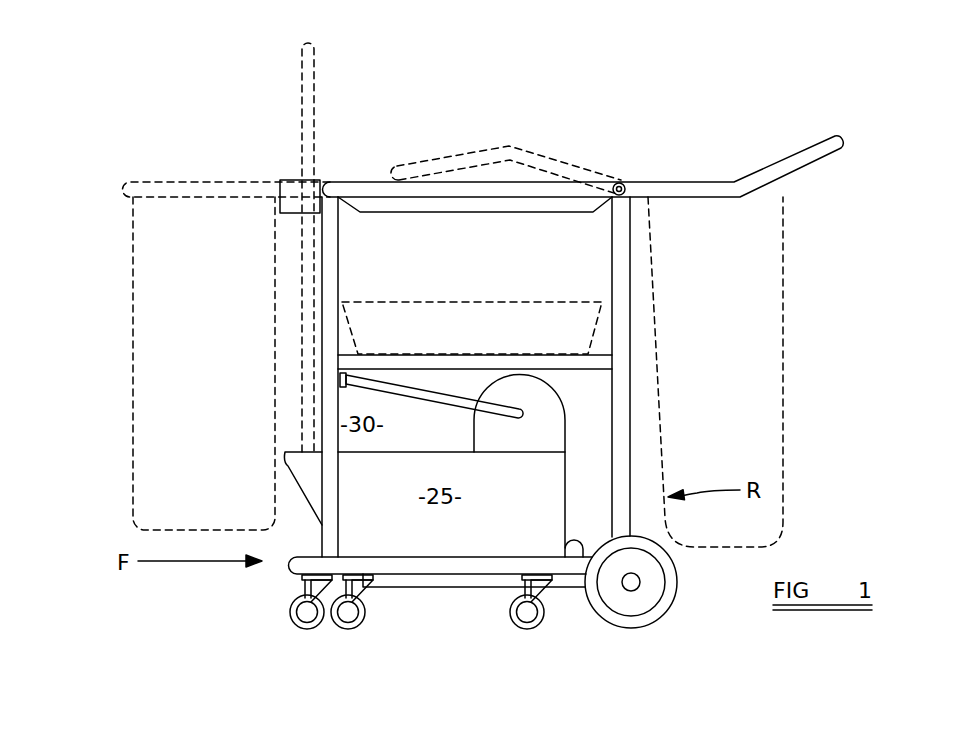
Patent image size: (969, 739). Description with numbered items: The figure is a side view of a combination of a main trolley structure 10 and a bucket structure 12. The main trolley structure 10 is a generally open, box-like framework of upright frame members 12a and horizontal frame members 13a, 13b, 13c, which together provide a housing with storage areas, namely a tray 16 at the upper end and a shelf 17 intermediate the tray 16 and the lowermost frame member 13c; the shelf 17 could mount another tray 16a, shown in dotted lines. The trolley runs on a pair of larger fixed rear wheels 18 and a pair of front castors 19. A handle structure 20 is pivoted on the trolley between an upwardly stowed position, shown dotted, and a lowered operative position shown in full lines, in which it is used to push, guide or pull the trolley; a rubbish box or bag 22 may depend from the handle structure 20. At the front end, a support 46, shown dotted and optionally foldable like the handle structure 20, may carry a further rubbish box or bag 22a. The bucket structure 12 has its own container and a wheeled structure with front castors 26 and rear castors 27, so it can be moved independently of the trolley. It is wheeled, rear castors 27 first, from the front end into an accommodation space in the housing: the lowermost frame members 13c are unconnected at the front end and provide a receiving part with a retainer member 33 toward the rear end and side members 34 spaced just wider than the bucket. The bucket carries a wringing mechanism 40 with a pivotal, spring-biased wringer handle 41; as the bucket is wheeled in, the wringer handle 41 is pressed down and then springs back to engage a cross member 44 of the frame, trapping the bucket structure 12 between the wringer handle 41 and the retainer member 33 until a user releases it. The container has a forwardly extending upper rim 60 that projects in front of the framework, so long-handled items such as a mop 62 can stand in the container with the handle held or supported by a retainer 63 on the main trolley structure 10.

The main trolley structure 10 is at (640, 306).
The bucket structure 12 is at (585, 466).
The upright frame member 12a is at (330, 253).
The horizontal frame member 13a is at (583, 185).
The horizontal frame member 13b is at (595, 365).
The lowermost horizontal frame member 13c is at (413, 563).
The tray 16 is at (530, 187).
The tray 16a is at (382, 302).
The shelf 17 is at (352, 358).
The rear wheel 18 is at (657, 613).
The front castor 19 is at (290, 610).
The handle structure 20 is at (475, 160).
The rubbish bag 22 is at (752, 225).
The rubbish bag 22a is at (178, 275).
The front castor 26 is at (348, 620).
The rear castor 27 is at (527, 617).
The retainer member 33 is at (583, 556).
The side member 34 is at (468, 563).
The wringing mechanism 40 is at (530, 403).
The wringer handle 41 is at (428, 400).
The cross member 44 is at (343, 378).
The support 46 is at (152, 183).
The upper rim 60 is at (295, 450).
The mop 62 is at (315, 117).
The retainer 63 is at (283, 182).